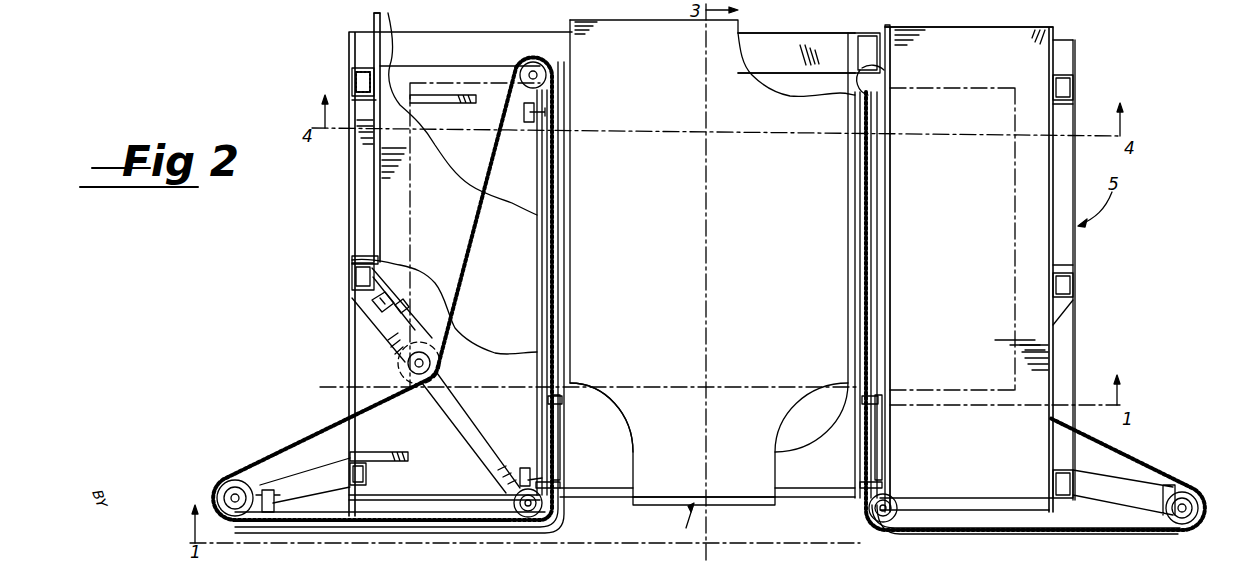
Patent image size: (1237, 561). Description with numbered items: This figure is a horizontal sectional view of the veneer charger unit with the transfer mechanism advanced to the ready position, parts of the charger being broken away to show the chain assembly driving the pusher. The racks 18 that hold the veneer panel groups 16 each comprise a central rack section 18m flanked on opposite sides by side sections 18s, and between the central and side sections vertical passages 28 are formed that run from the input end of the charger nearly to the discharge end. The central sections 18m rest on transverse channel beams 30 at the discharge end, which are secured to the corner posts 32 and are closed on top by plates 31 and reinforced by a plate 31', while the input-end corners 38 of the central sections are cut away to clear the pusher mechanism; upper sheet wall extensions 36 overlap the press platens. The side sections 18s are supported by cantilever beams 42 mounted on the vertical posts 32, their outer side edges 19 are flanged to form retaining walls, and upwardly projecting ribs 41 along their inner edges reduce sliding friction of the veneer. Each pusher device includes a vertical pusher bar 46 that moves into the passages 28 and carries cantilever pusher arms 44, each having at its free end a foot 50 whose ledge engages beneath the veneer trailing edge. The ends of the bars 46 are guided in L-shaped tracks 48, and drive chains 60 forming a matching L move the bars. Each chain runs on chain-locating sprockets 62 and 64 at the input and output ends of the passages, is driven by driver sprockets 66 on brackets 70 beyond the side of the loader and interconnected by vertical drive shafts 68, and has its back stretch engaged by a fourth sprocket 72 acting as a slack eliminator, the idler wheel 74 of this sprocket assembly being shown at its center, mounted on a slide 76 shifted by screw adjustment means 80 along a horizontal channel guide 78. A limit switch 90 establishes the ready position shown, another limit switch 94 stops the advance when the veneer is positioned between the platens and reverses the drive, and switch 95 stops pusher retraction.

The veneer panel groups 16 is at (976, 395).
The racks 18 is at (704, 521).
The central rack section 18m is at (712, 262).
The side sections 18s is at (698, 261).
The outer side edges 19 is at (383, 190).
The vertical passages 28 is at (852, 318).
The channel beams 30 is at (862, 34).
The plates 31 is at (414, 17).
The reinforcing plate 31' is at (902, 257).
The corner posts 32 is at (1075, 91).
The upper sheet wall extensions 36 is at (742, 30).
The input-end corners 38 is at (709, 427).
The ribs 41 is at (882, 430).
The cantilever beams 42 is at (1075, 267).
The pusher arms 44 is at (880, 455).
The pusher bar 46 is at (858, 485).
The L-shaped tracks 48 is at (855, 432).
The foot 50 is at (882, 398).
The drive chains 60 is at (1152, 470).
The chain-locating sprocket 62 is at (860, 512).
The chain-locating sprocket 64 is at (882, 84).
The driver sprockets 66 is at (1190, 494).
The vertical drive shafts 68 is at (1192, 514).
The brackets 70 is at (1090, 480).
The fourth sprocket 72 is at (400, 383).
The idler sprocket 74 is at (421, 360).
The slide 76 is at (390, 330).
The horizontal channel guide 78 is at (471, 433).
The screw adjustment means 80 is at (372, 305).
The limit switch 90 is at (527, 468).
The limit switch 94 is at (528, 124).
The switch 95 is at (268, 488).